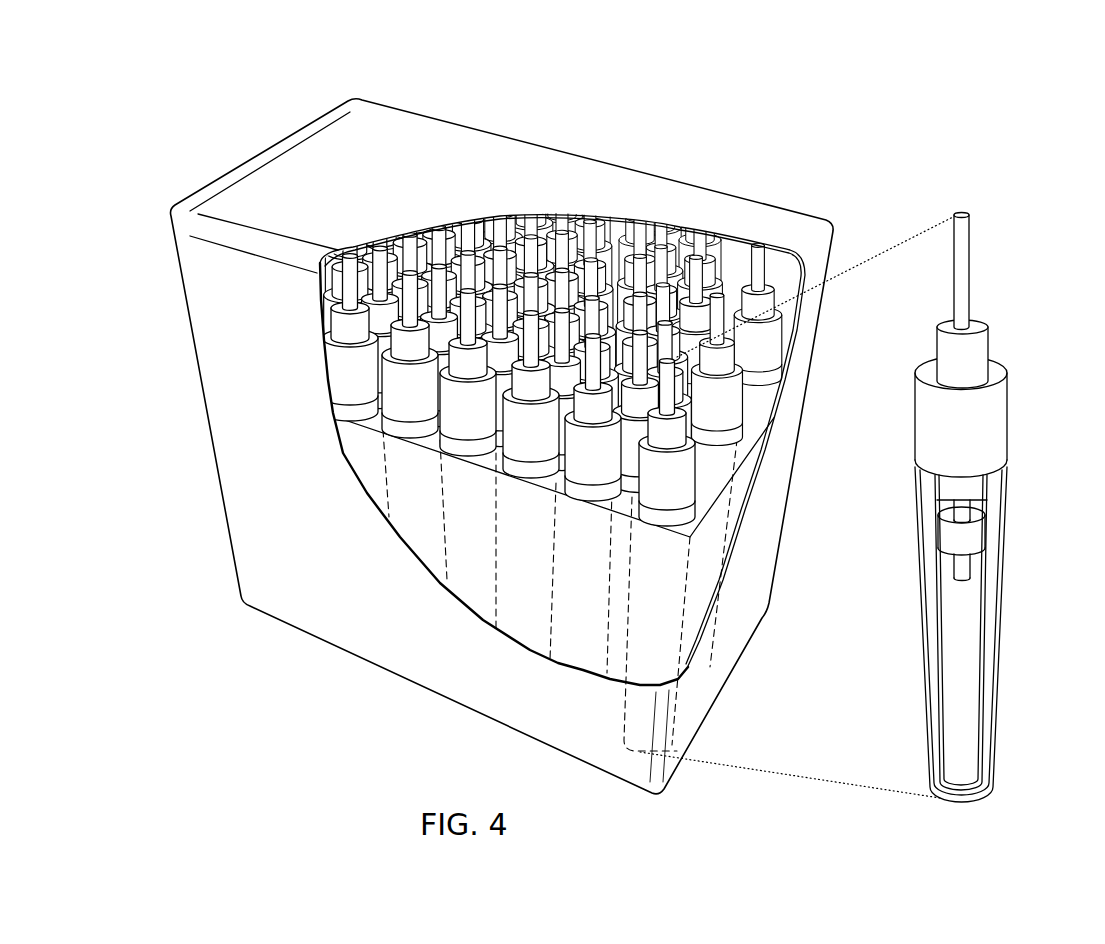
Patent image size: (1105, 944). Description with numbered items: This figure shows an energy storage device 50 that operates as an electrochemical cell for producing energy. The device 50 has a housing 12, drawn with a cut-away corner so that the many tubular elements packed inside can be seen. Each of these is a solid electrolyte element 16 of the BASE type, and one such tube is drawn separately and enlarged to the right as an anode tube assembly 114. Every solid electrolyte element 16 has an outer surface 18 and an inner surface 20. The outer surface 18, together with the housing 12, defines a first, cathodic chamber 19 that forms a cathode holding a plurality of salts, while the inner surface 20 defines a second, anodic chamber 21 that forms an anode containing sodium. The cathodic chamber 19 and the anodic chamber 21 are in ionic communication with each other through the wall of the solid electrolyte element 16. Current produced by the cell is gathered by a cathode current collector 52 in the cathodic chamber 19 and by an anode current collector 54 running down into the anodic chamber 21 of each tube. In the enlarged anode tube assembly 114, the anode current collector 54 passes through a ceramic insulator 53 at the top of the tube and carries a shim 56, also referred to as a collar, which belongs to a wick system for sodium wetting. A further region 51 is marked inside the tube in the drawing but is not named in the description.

The housing 12 is at (373, 117).
The cathode current collector 52 is at (612, 180).
The first, cathodic chamber 19 is at (740, 255).
The energy storage device 50 is at (1005, 430).
The anode tube assembly 114 is at (989, 197).
The anode current collector 54 is at (1013, 241).
The ceramic insulator 53 is at (985, 425).
The second, anodic chamber 21 is at (993, 501).
The shim 56 is at (982, 532).
The solid electrolyte element 16 is at (1010, 639).
The sample cavity 51 is at (968, 690).
The outer surface 18 is at (998, 738).
The inner surface 20 is at (977, 763).